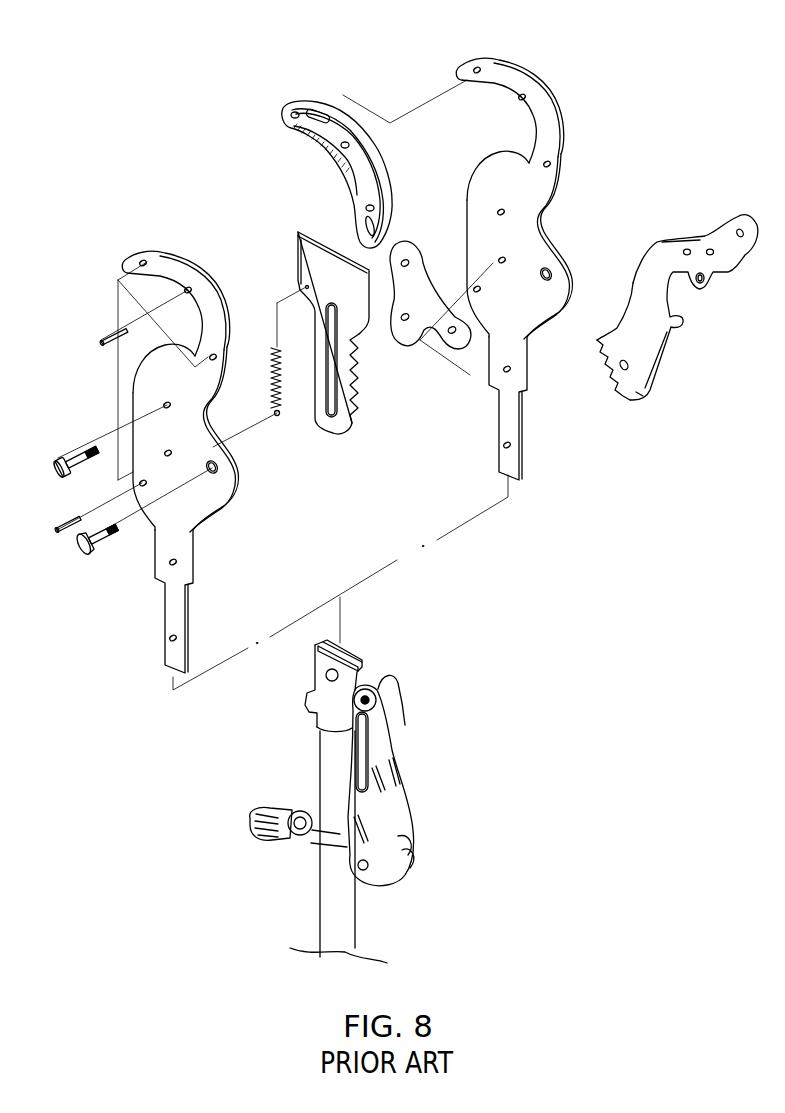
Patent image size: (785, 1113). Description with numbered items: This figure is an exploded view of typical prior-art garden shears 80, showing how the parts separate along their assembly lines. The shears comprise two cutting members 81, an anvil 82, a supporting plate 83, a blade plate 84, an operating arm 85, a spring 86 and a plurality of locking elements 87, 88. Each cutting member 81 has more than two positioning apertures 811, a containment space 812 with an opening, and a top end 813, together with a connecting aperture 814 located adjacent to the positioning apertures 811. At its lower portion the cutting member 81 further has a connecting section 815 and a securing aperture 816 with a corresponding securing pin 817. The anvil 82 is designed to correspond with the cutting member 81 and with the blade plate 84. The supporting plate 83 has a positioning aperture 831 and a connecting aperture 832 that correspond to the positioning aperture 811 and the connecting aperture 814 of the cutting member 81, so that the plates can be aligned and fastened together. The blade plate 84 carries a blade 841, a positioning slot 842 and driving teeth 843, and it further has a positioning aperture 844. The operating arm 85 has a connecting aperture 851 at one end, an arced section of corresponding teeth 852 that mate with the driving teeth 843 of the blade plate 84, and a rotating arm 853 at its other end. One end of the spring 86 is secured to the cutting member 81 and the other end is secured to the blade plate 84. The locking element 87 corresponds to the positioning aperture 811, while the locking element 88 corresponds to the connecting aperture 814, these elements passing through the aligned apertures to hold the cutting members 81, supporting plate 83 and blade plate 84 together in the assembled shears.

The garden shears 80 is at (523, 603).
The cutting member 81 is at (132, 393).
The positioning aperture 811 is at (167, 407).
The containment space 812 is at (137, 312).
The top end 813 is at (157, 260).
The connecting aperture 814 is at (210, 477).
The connecting section 815 is at (170, 617).
The securing aperture 816 is at (143, 487).
The securing pin 817 is at (63, 540).
The anvil 82 is at (297, 108).
The supporting plate 83 is at (412, 340).
The positioning aperture 831 is at (410, 263).
The connecting aperture 832 is at (513, 360).
The blade plate 84 is at (302, 232).
The blade 841 is at (320, 233).
The positioning slot 842 is at (332, 420).
The driving teeth 843 is at (360, 383).
The positioning aperture 844 is at (295, 290).
The operating arm 85 is at (667, 343).
The connecting aperture 851 is at (633, 398).
The corresponding teeth 852 is at (610, 382).
The rotating arm 853 is at (655, 258).
The spring 86 is at (275, 417).
The locking element 87 is at (58, 475).
The locking element 88 is at (90, 553).